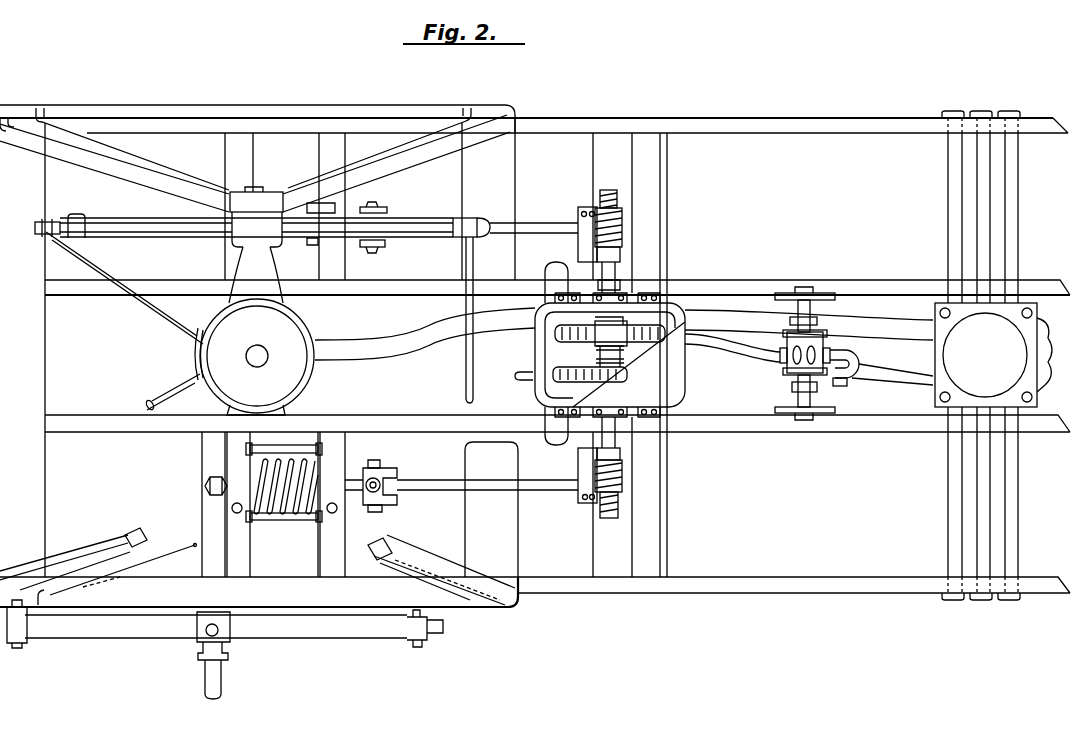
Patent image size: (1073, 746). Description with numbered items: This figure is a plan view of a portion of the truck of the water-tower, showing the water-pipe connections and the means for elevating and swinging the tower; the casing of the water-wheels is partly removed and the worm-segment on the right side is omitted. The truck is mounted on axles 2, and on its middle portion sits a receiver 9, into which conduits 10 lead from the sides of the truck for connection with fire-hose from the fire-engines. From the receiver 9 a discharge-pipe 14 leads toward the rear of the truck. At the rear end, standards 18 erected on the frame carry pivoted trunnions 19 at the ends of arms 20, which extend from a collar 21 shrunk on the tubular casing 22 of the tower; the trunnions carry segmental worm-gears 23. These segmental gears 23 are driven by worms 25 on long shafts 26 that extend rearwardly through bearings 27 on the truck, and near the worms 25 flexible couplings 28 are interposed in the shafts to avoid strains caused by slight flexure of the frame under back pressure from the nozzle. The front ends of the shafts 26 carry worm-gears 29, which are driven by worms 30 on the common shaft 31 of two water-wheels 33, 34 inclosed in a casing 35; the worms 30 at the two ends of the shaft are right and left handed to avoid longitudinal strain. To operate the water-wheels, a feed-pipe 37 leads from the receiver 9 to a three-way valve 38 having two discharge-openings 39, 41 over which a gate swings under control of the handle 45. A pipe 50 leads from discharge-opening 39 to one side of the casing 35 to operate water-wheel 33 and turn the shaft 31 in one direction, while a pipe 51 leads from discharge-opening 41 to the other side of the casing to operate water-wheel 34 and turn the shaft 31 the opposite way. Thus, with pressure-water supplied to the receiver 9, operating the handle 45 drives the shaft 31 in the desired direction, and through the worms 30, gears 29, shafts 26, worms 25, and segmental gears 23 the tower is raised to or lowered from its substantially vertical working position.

The axles 2 is at (220, 675).
The receiver 9 is at (993, 355).
The conduits 10 is at (1017, 205).
The discharge-pipe 14 is at (415, 335).
The standards 18 is at (157, 168).
The trunnions 19 is at (262, 190).
The arms 20 is at (270, 263).
The collar 21 is at (300, 323).
The tubular casing 22 is at (308, 377).
The segmental worm-gears 23 is at (130, 212).
The worms 25 is at (278, 502).
The shafts 26 is at (540, 212).
The bearings 27 is at (345, 470).
The flexible couplings 28 is at (382, 208).
The worm-gears 29 is at (608, 190).
The worms 30 is at (623, 220).
The shaft 31 is at (610, 443).
The water-wheel 33 is at (610, 342).
The water-wheel 34 is at (590, 364).
The casing 35 is at (610, 355).
The feed-pipe 37 is at (887, 370).
The three-way valve 38 is at (792, 367).
The discharge-opening 39 is at (785, 350).
The discharge-opening 41 is at (822, 348).
The handle 45 is at (787, 290).
The pipe 50 is at (722, 337).
The pipe 51 is at (515, 376).